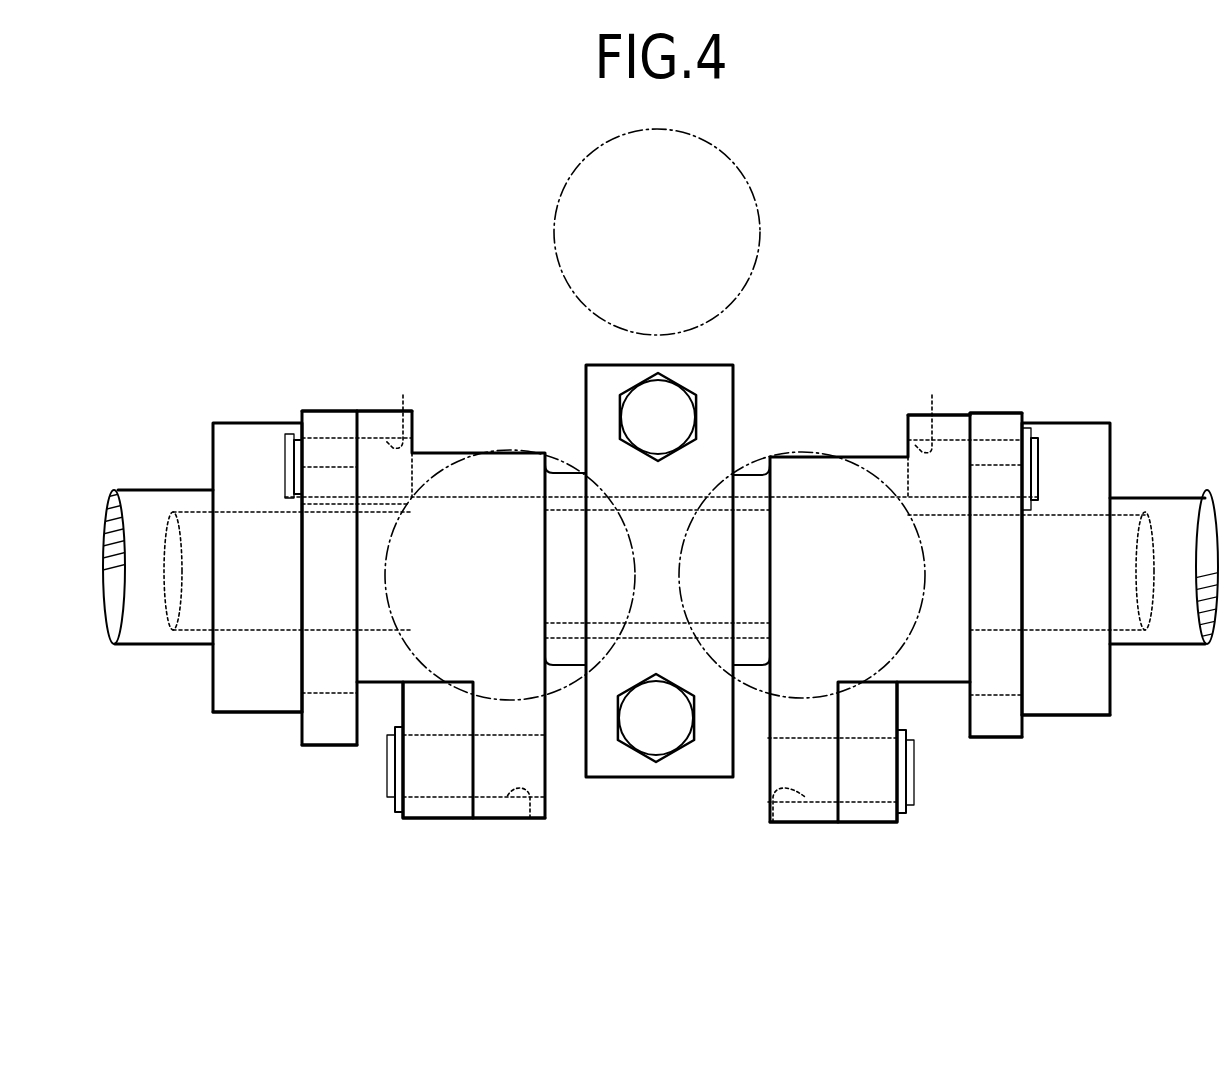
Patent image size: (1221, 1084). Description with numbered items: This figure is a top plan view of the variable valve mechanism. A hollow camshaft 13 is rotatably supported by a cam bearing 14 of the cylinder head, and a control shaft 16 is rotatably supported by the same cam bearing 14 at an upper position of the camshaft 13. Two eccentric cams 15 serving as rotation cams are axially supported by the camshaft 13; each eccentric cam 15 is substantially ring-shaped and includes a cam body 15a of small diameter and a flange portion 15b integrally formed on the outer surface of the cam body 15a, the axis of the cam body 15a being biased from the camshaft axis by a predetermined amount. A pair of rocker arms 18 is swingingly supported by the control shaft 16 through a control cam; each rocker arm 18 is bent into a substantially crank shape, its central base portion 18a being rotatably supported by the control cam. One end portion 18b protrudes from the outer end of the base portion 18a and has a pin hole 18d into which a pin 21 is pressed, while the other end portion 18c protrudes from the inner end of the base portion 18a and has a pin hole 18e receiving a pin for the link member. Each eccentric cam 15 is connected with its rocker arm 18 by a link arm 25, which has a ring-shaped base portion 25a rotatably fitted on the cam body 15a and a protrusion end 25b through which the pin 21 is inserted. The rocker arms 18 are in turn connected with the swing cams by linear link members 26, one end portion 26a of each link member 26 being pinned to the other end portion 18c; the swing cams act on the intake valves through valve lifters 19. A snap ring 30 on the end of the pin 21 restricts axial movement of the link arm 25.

The camshaft 13 is at (146, 505).
The cam bearing 14 is at (735, 410).
The eccentric cam 15 is at (213, 712).
The cam body 15a is at (215, 685).
The flange portion 15b is at (312, 678).
The control shaft 16 is at (168, 640).
The rocker arm 18 is at (452, 455).
The central base portion 18a is at (373, 670).
The one end portion 18b is at (377, 408).
The other end portion 18c is at (497, 822).
The pin hole 18d is at (403, 395).
The pin hole 18e is at (530, 822).
The valve lifter 19 is at (568, 462).
The pin 21 is at (283, 465).
The link arm 25 is at (302, 745).
The ring-shaped base portion 25a is at (327, 725).
The protrusion end 25b is at (327, 418).
The link member 26 is at (448, 820).
The end portion 26a is at (415, 808).
The snap ring 30 is at (298, 423).